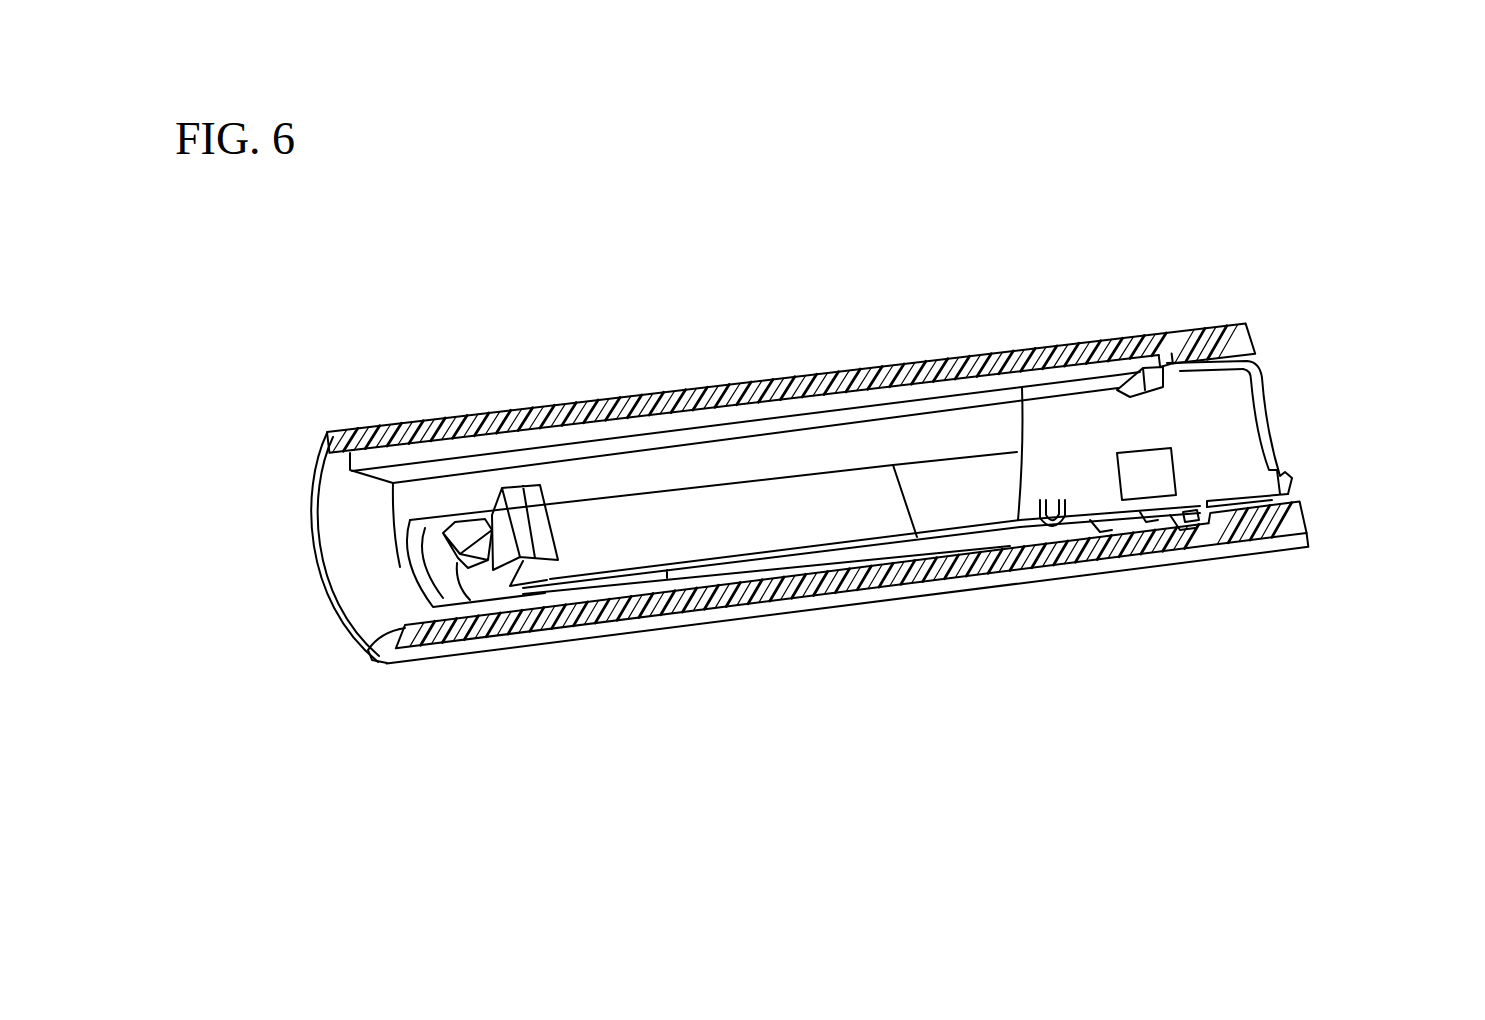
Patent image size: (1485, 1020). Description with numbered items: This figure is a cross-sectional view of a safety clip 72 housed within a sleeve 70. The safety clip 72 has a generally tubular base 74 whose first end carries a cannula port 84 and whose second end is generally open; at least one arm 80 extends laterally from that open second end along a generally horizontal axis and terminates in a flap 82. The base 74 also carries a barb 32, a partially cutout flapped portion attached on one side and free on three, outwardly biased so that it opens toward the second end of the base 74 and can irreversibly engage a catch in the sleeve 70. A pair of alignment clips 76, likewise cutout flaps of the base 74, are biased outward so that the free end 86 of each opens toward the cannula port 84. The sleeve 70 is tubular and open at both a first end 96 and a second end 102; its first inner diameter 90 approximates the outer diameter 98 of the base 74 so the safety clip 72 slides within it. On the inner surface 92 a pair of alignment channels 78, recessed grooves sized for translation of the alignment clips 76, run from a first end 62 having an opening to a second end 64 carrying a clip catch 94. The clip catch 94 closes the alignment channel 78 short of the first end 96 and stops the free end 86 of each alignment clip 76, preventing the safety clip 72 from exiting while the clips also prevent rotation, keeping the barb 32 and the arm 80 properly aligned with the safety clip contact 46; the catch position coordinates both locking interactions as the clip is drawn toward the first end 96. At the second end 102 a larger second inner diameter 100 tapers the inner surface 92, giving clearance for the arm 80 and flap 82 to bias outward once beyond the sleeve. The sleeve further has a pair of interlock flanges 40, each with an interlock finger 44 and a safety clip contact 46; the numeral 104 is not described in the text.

The barb 32 is at (1262, 378).
The interlock flange 40 is at (600, 580).
The interlock finger 44 is at (490, 593).
The safety clip contact 46 is at (475, 548).
The first end 62 is at (366, 458).
The second end 64 is at (1147, 382).
The sleeve 70 is at (750, 607).
The safety clip 72 is at (963, 455).
The base 74 is at (1047, 497).
The alignment clip 76 is at (1142, 388).
The alignment channel 78 is at (472, 455).
The arm 80 is at (728, 512).
The flap 82 is at (540, 560).
The cannula port 84 is at (1274, 458).
The free end 86 is at (1180, 528).
The first inner diameter 90 is at (380, 498).
The inner surface 92 is at (558, 472).
The clip catch 94 is at (1166, 367).
The first end 96 is at (1302, 538).
The outer diameter 98 is at (1095, 525).
The second inner diameter 100 is at (317, 448).
The second end 102 is at (372, 645).
The inner rim 104 is at (352, 537).